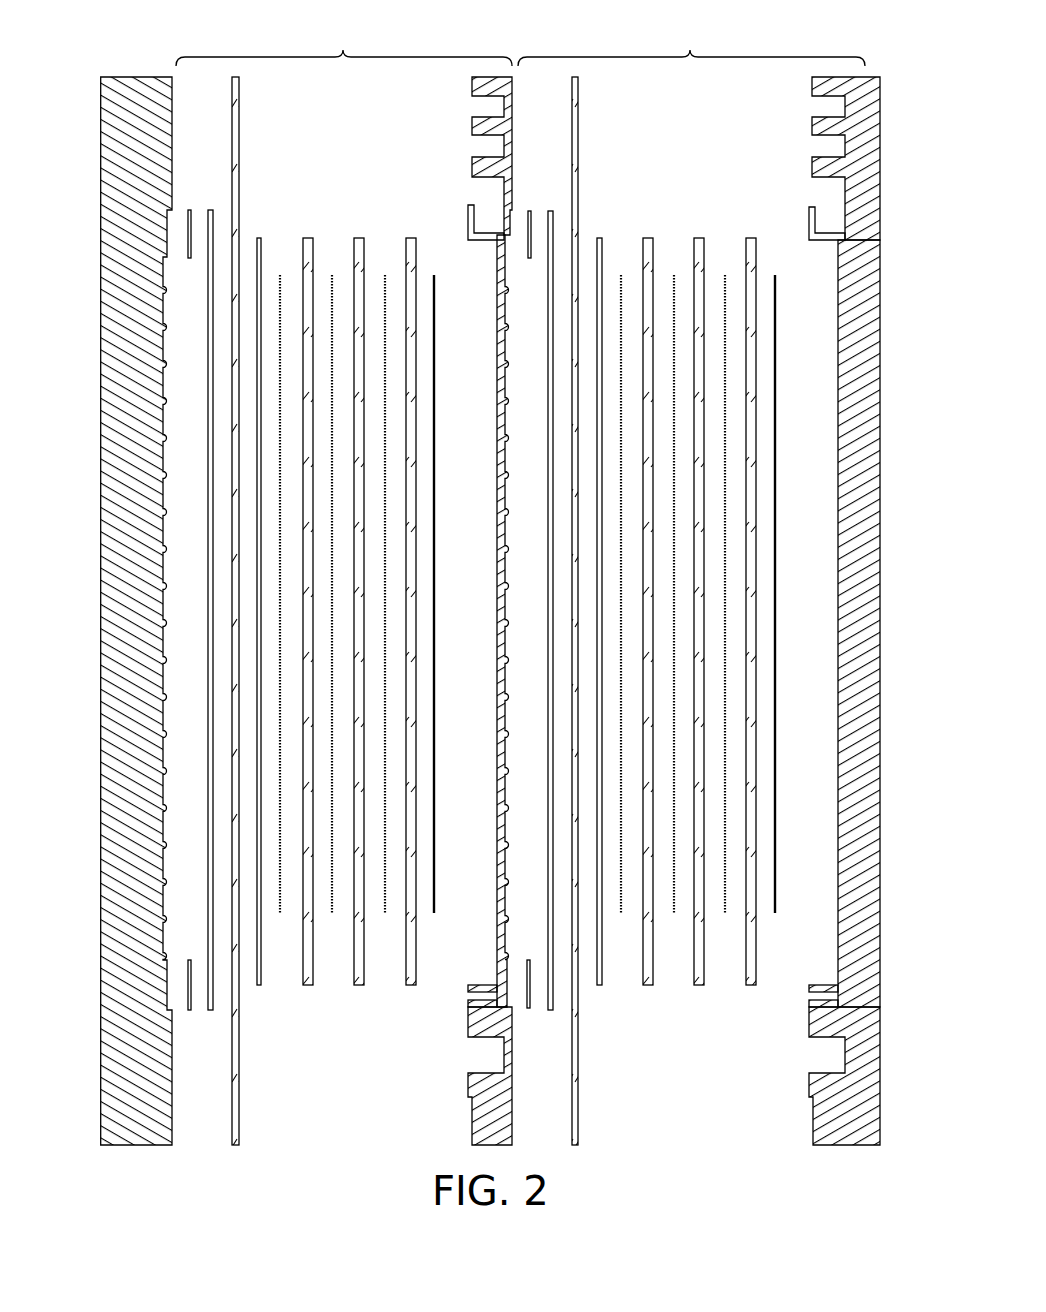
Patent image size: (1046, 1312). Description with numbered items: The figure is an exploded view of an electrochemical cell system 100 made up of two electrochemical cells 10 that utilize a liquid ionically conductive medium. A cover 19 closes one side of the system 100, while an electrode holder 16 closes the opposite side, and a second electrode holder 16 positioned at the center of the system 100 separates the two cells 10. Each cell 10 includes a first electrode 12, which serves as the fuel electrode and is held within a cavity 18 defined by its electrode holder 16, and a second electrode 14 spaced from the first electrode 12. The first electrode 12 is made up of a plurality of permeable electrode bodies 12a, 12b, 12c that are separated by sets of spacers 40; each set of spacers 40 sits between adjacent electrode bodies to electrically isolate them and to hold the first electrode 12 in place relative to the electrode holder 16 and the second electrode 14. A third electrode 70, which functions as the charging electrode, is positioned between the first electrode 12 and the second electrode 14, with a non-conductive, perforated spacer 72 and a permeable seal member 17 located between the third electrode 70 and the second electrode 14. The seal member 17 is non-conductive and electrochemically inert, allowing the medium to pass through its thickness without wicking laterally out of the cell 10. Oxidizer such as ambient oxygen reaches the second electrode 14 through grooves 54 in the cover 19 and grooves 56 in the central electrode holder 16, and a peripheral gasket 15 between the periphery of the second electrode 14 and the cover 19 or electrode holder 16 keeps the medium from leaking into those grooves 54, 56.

The electrochemical cell system 100 is at (141, 51).
The electrochemical cell 10 is at (520, 45).
The first electrode 12 is at (795, 638).
The permeable electrode body 12a is at (434, 913).
The permeable electrode body 12b is at (385, 913).
The permeable electrode body 12c is at (332, 913).
The second electrode 14 is at (208, 300).
The peripheral gasket 15 is at (190, 212).
The electrode holder 16 is at (471, 84).
The seal member 17 is at (240, 155).
The cavity 18 is at (465, 266).
The cover 19 is at (157, 118).
The spacer 40 is at (308, 247).
The groove 54 is at (165, 383).
The groove 56 is at (508, 548).
The third electrode 70 is at (280, 913).
The spacer 72 is at (260, 256).